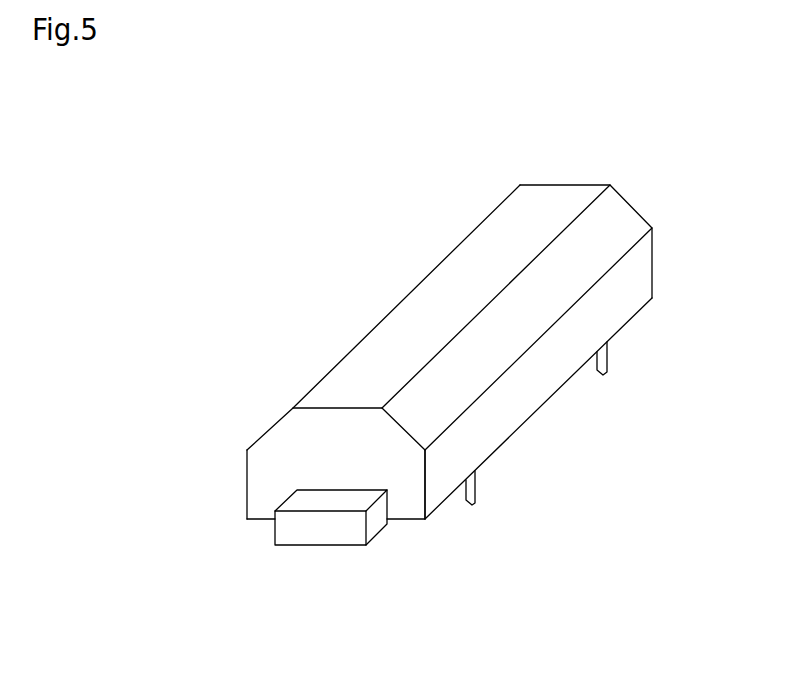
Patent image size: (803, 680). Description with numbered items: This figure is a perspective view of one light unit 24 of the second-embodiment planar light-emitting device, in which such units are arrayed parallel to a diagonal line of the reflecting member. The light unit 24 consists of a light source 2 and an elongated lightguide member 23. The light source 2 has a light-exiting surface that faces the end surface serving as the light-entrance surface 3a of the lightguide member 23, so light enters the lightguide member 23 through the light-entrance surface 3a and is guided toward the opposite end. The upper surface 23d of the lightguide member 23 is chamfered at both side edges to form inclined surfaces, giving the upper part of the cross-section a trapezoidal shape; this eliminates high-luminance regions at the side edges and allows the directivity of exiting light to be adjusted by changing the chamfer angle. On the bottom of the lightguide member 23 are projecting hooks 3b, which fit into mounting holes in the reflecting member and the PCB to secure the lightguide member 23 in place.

The light source 2 is at (318, 530).
The light-entrance surface 3a is at (408, 492).
The projecting hooks 3b is at (475, 500).
The lightguide member 23 is at (449, 389).
The upper surface 23d is at (407, 274).
The light unit 24 is at (478, 358).